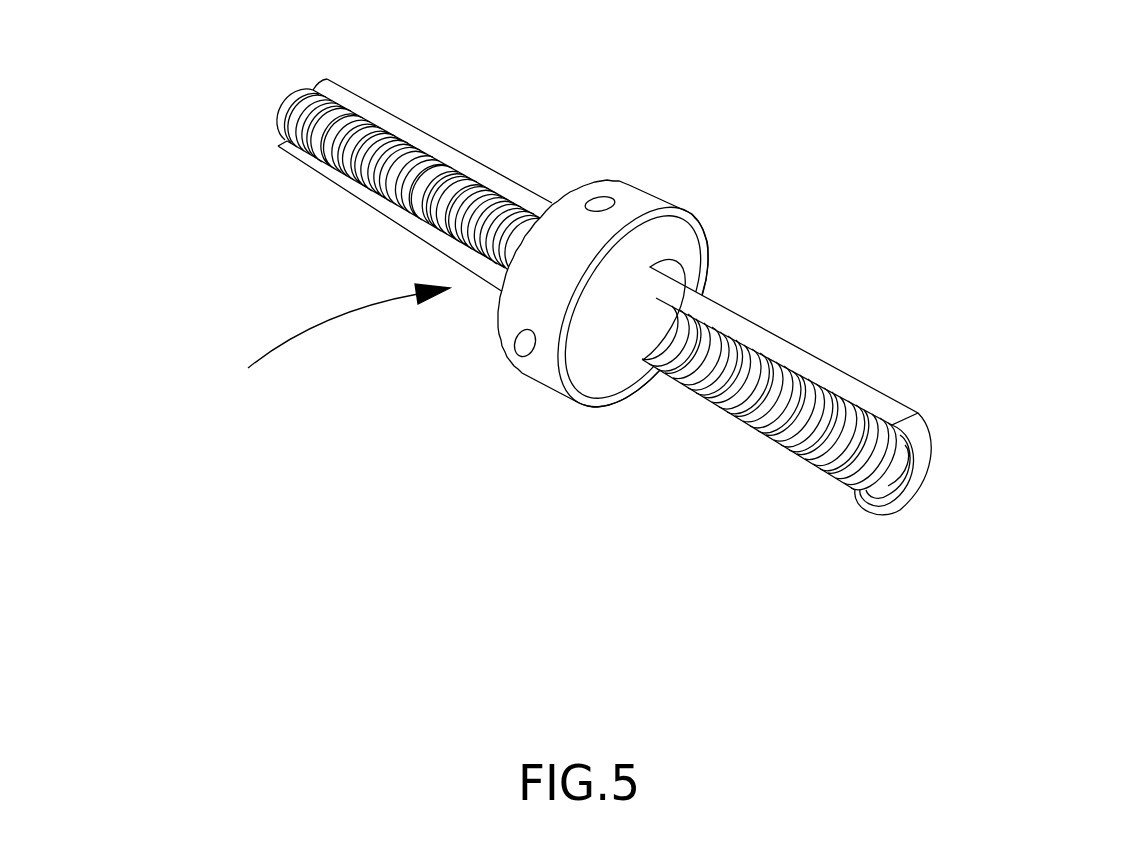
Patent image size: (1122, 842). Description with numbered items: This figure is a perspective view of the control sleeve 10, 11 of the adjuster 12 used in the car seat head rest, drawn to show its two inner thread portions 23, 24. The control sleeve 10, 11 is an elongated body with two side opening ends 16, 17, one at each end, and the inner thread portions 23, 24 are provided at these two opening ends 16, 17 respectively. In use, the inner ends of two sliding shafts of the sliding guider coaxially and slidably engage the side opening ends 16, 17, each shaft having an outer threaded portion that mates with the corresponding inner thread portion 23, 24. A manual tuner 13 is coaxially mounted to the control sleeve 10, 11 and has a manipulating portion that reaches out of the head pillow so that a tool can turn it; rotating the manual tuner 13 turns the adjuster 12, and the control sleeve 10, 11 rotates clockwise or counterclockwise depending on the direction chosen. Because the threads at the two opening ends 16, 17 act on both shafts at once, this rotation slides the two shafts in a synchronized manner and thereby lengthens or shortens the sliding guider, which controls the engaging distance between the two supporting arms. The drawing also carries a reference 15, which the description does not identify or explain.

The control sleeve 10 is at (342, 158).
The control sleeve 11 is at (794, 443).
The adjuster 12 is at (589, 300).
The manual tuner 13 is at (605, 207).
The rotation direction arrow 15 is at (328, 342).
The side opening end 16 is at (900, 512).
The side opening end 17 is at (280, 153).
The inner thread portion 23 is at (393, 175).
The inner thread portion 24 is at (750, 423).